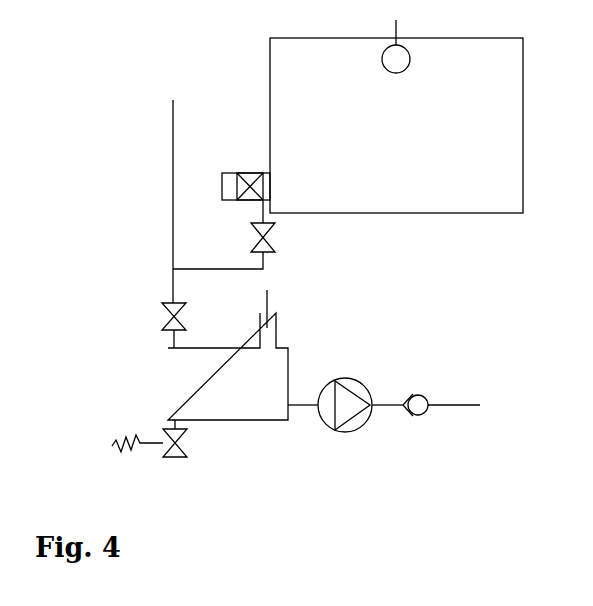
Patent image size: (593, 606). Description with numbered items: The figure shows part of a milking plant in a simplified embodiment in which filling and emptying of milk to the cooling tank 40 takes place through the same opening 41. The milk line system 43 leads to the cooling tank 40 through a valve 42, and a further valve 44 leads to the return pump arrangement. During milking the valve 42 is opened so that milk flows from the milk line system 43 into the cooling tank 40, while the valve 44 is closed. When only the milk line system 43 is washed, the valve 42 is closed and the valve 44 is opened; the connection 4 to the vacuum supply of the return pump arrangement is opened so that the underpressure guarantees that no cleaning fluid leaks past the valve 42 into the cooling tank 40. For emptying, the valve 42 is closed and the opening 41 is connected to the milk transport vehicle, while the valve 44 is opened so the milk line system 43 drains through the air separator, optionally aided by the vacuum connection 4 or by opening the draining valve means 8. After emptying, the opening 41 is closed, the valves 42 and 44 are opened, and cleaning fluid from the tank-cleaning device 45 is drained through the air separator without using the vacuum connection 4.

The connection to the vacuum supply 4 is at (272, 297).
The draining valve means 8 is at (186, 460).
The cooling tank 40 is at (411, 160).
The opening 41 is at (228, 173).
The valve 42 is at (250, 237).
The milk line system 43 is at (170, 190).
The valve 44 is at (165, 318).
The tank-cleaning device 45 is at (384, 68).